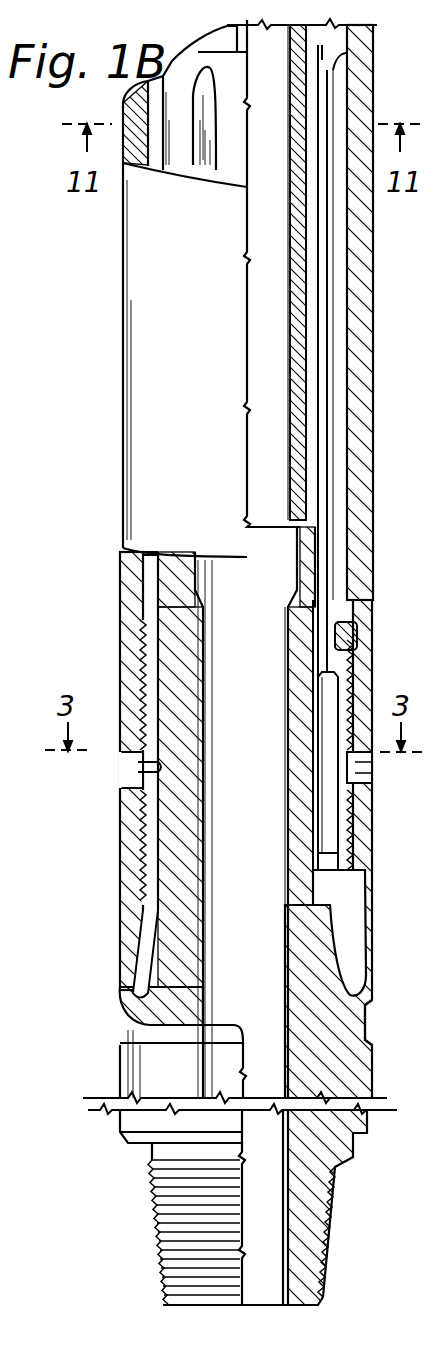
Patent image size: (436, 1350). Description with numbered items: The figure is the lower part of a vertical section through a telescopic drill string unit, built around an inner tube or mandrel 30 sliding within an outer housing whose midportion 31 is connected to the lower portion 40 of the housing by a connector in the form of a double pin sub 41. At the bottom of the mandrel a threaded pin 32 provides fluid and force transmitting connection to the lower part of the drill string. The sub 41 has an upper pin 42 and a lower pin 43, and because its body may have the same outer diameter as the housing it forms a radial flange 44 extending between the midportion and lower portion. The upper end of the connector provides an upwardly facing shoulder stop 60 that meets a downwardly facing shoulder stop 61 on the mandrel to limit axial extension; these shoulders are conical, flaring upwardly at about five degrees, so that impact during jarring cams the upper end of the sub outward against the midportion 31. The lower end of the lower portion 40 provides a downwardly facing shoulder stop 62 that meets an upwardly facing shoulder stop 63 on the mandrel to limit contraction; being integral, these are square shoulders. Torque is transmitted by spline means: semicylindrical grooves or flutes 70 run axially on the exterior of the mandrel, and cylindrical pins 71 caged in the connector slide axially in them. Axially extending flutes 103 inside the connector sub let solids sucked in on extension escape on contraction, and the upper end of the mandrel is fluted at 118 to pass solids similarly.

The inner tube or mandrel 30 is at (288, 630).
The midportion of the housing 31 is at (357, 432).
The threaded pin 32 is at (310, 1203).
The lower portion of the housing 40 is at (360, 938).
The double pin sub 41 is at (362, 784).
The upper pin 42 is at (360, 644).
The lower pin 43 is at (340, 897).
The radial flange 44 is at (360, 767).
The upwardly facing shoulder stop 60 is at (336, 620).
The downwardly facing shoulder stop 61 is at (350, 56).
The downwardly facing shoulder stop 62 is at (367, 976).
The upwardly facing shoulder stop 63 is at (366, 1014).
The grooves or flutes 70 is at (222, 170).
The cylindrical pins 71 is at (328, 708).
The axially extending flutes 103 is at (157, 768).
The fluted upper end of the mandrel 118 is at (248, 40).